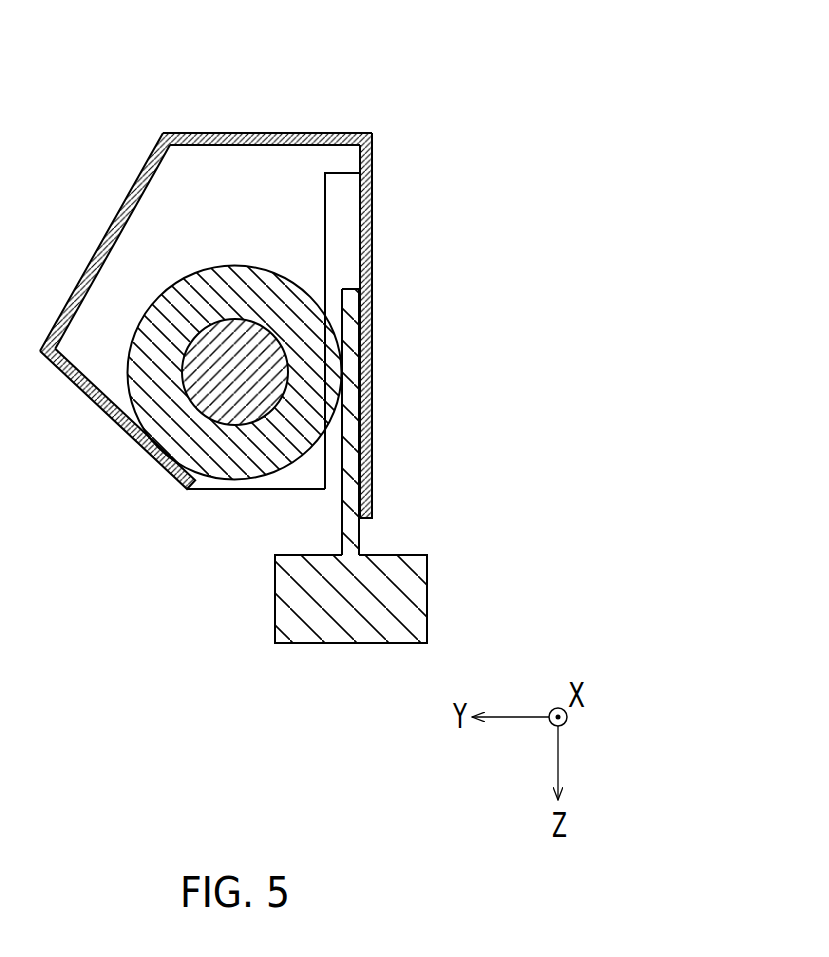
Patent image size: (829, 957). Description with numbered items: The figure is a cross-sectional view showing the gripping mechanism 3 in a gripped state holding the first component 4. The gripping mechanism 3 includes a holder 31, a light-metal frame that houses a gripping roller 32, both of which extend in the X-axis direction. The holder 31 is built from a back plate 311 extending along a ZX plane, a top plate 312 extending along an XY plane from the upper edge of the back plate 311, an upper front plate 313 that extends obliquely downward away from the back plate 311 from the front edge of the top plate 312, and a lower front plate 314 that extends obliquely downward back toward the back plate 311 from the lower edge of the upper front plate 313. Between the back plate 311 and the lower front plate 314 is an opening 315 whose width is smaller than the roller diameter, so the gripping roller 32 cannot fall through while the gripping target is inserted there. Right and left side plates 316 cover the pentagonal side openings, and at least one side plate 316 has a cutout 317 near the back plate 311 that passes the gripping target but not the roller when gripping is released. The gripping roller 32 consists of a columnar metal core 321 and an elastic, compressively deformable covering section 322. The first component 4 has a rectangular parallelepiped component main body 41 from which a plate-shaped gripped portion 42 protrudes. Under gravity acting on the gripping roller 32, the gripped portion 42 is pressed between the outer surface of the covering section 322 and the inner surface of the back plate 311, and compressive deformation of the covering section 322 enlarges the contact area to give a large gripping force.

The gripping mechanism 3 is at (255, 299).
The holder 31 is at (241, 322).
The back plate 311 is at (372, 255).
The top plate 312 is at (279, 133).
The upper front plate 313 is at (90, 261).
The lower front plate 314 is at (80, 387).
The opening 315 is at (232, 503).
The side plate 316 is at (191, 160).
The cutout 317 is at (345, 216).
The gripping roller 32 is at (209, 320).
The core 321 is at (233, 372).
The covering section 322 is at (200, 303).
The first component 4 is at (331, 494).
The component main body 41 is at (428, 590).
The gripped portion 42 is at (342, 518).